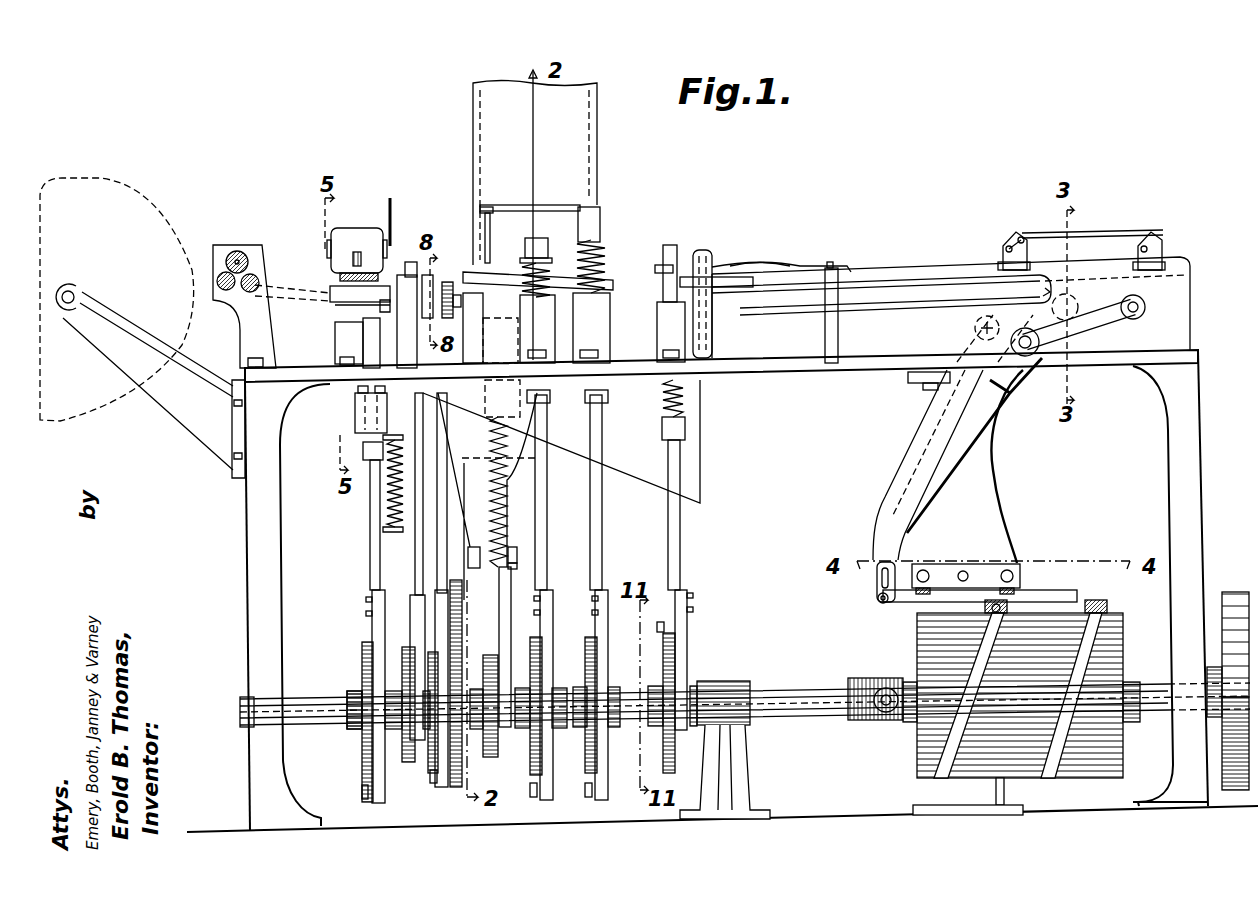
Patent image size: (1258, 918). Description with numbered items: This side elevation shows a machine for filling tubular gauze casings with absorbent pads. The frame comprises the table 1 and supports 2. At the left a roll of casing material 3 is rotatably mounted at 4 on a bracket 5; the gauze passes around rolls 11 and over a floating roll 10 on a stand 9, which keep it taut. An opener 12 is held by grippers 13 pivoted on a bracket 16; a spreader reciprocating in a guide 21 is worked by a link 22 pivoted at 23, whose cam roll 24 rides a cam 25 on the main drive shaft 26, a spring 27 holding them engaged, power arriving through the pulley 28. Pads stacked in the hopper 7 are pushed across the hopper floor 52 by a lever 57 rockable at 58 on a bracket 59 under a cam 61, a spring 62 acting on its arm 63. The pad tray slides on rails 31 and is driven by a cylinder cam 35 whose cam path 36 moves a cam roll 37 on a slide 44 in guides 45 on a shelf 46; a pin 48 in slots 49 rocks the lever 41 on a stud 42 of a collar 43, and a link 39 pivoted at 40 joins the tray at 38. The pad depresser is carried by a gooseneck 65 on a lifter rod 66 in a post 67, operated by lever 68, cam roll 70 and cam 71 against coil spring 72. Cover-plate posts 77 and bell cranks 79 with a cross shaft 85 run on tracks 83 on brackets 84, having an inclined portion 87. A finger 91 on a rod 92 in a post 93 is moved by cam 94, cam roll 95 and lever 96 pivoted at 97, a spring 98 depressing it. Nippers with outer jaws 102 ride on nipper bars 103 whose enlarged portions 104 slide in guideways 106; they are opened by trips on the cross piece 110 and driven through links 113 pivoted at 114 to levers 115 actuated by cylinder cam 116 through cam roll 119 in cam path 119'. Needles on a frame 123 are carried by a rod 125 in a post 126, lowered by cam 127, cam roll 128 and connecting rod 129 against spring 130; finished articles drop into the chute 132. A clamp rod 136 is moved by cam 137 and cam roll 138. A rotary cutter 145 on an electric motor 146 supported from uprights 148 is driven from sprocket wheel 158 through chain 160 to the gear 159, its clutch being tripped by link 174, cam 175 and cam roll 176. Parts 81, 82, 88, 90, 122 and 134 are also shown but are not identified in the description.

The platform or table 1 is at (783, 372).
The supports 2 is at (248, 595).
The casing material 3 is at (86, 182).
The roll mounting 4 is at (70, 289).
The bracket 5 is at (172, 416).
The magazine or hopper 7 is at (584, 135).
The stand 9 is at (246, 339).
The floating roll 10 is at (233, 255).
The rolls 11 is at (257, 278).
The opener 12 is at (336, 292).
The gripper or jaw 13 is at (362, 304).
The bracket 16 is at (340, 336).
The guide 21 is at (355, 410).
The link 22 is at (370, 548).
The pivot 23 is at (363, 450).
The cam roll 24 is at (362, 793).
The cam 25 is at (365, 666).
The main drive shaft 26 is at (310, 712).
The spring 27 is at (390, 508).
The pulley 28 is at (1234, 592).
The rails 31 is at (640, 318).
The cylinder cam 35 is at (925, 740).
The peripheral cam path 36 is at (985, 655).
The cam roll 37 is at (1000, 612).
The link connection 38 is at (1072, 296).
The link 39 is at (1045, 289).
The pivot 40 is at (975, 328).
The lever 41 is at (922, 432).
The stud 42 is at (880, 708).
The collar 43 is at (860, 678).
The slide 44 is at (1072, 592).
The guides 45 is at (930, 570).
The shelf 46 is at (976, 570).
The connecting pin 48 is at (878, 600).
The slots 49 is at (878, 580).
The hopper floor 52 is at (478, 302).
The lever 57 is at (512, 486).
The pivot 58 is at (516, 552).
The bracket 59 is at (472, 568).
The cam 61 is at (490, 757).
The spring 62 is at (505, 430).
The arm 63 is at (512, 569).
The gooseneck 65 is at (536, 240).
The lifter rod 66 is at (550, 396).
The post 67 is at (522, 338).
The lever 68 is at (547, 510).
The cam roll 70 is at (536, 797).
The cam 71 is at (530, 757).
The coil spring 72 is at (526, 266).
The posts 77 is at (1020, 266).
The bell cranks 79 is at (1016, 234).
The pivot 81 is at (1005, 256).
The bar 82 is at (1110, 232).
The tracks 83 is at (800, 264).
The brackets 84 is at (825, 342).
The cross shaft 85 is at (1008, 248).
The inclined portion 87 is at (835, 263).
The cam 88 is at (758, 262).
The bracket 90 is at (702, 258).
The finger 91 is at (672, 245).
The rod 92 is at (660, 266).
The post 93 is at (660, 342).
The cam 94 is at (675, 662).
The cam roll 95 is at (665, 627).
The connecting lever 96 is at (680, 543).
The pivot 97 is at (662, 435).
The spring 98 is at (665, 408).
The outer jaw 102 is at (681, 282).
The nipper bar 103 is at (908, 270).
The enlarged portions 104 is at (1170, 295).
The guideways 106 is at (900, 320).
The cross piece 110 is at (409, 285).
The link 113 is at (1085, 336).
The pivot 114 is at (1136, 318).
The levers 115 is at (1000, 390).
The cylinder cam 116 is at (1073, 770).
The cam roll 119 is at (1068, 610).
The peripheral cam path 119' is at (1122, 628).
The rod 122 is at (489, 222).
The frame 123 is at (550, 205).
The rod 125 is at (600, 222).
The post 126 is at (600, 340).
The cam 127 is at (594, 650).
The cam roll 128 is at (592, 797).
The connecting rod 129 is at (602, 538).
The spring 130 is at (598, 250).
The chute 132 is at (700, 462).
The plate 134 is at (446, 280).
The rod 136 is at (437, 430).
The cam 137 is at (430, 752).
The cam roll 138 is at (432, 783).
The rotary cutter or saw 145 is at (393, 212).
The electric motor 146 is at (349, 236).
The uprights 148 is at (364, 318).
The sprocket wheel 158 is at (454, 788).
The sprocket or gear 159 is at (470, 282).
The sprocket chain 160 is at (460, 600).
The link 174 is at (418, 543).
The cam 175 is at (402, 738).
The cam roll 176 is at (405, 644).